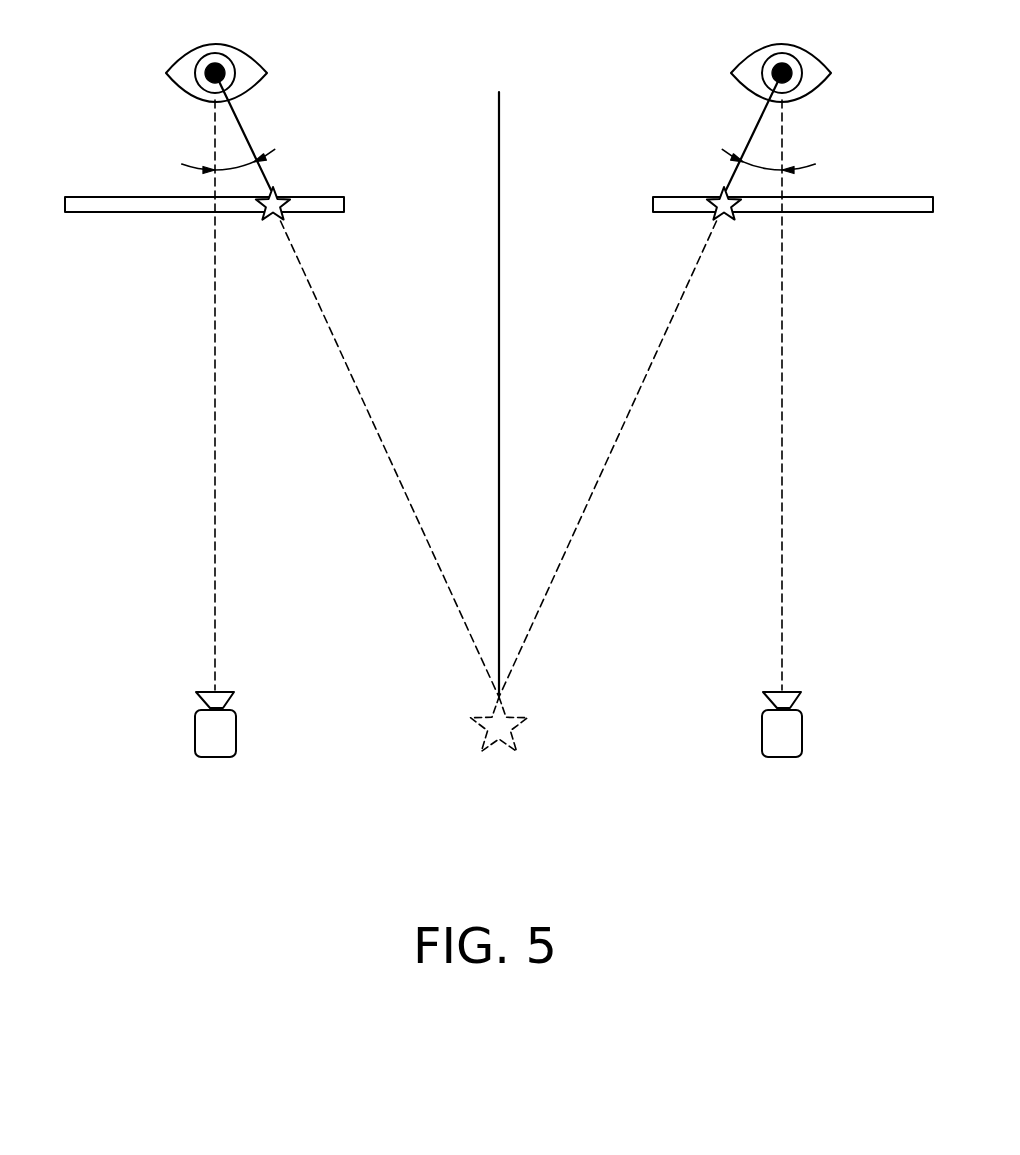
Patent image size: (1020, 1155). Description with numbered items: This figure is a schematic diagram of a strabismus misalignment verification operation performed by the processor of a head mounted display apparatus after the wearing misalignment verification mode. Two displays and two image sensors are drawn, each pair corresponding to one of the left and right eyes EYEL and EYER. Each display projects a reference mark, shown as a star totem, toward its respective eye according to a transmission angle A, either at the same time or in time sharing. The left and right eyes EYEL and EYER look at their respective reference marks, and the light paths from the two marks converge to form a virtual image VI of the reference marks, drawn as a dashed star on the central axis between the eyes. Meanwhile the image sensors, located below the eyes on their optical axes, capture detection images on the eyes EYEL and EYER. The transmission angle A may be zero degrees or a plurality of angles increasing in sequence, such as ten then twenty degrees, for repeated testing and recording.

The left eye EYEL is at (216, 53).
The right eye EYER is at (781, 53).
The transmission angle A is at (235, 168).
The virtual image VI is at (499, 748).